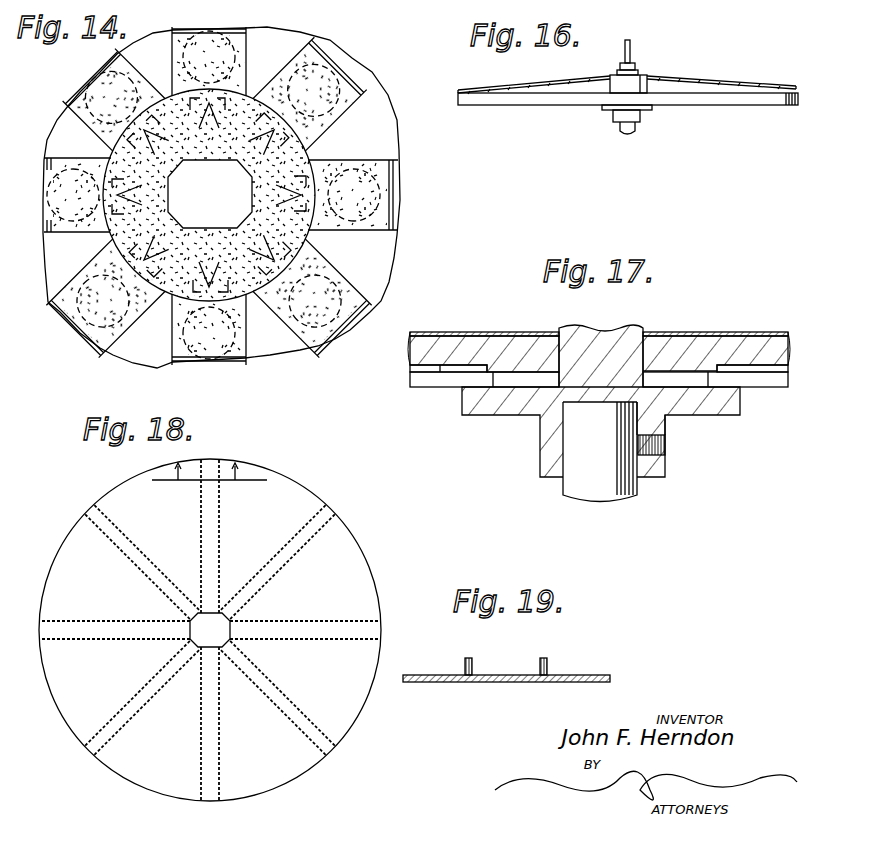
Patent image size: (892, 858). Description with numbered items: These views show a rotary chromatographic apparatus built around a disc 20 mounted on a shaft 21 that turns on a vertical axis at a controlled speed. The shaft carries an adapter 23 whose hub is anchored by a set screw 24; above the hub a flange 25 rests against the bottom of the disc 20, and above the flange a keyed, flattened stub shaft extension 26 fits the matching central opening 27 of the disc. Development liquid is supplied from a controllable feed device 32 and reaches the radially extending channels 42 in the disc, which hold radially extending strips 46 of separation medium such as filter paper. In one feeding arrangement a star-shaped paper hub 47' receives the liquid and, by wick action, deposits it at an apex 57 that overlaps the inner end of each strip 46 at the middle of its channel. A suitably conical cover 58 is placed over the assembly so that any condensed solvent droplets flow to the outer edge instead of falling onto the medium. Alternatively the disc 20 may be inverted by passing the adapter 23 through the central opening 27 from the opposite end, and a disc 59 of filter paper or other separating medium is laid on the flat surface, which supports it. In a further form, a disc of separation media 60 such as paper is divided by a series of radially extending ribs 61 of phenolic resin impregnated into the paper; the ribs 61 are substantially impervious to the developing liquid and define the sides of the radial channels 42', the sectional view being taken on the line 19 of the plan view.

In FIG. 18, the section line 19— 19 is at (207, 487).
In FIG. 14, the disc 20 is at (380, 147).
In FIG. 16, the disc 20 is at (560, 100).
In FIG. 17, the disc 20 is at (713, 347).
In FIG. 18, the disc 20 is at (290, 487).
In FIG. 16, the shaft 21 is at (634, 133).
In FIG. 17, the shaft 21 is at (593, 485).
In FIG. 17, the adapter 23 is at (650, 418).
In FIG. 18, the adapter 23 is at (230, 623).
In FIG. 17, the set screw 24 is at (663, 447).
In FIG. 16, the flange 25 is at (606, 110).
In FIG. 17, the flange 25 is at (502, 405).
In FIG. 17, the stub shaft extension 26 is at (617, 345).
In FIG. 18, the stub shaft extension 26 is at (217, 612).
In FIG. 14, the opening 27 is at (210, 194).
In FIG. 17, the opening 27 is at (573, 334).
In FIG. 16, the feed device 32 is at (631, 52).
In FIG. 14, the radially extending channels 42 is at (341, 97).
In FIG. 17, the radially extending channels 42 is at (595, 399).
In FIG. 18, the radial channels 42' is at (386, 609).
In FIG. 14, the radially extending strips of separation medium 46 is at (363, 195).
In FIG. 18, the radially extending strips of separation medium 46 is at (317, 518).
In FIG. 14, the paper hub 47' is at (310, 133).
In FIG. 14, the apex 57 is at (307, 243).
In FIG. 16, the conical cover 58 is at (700, 78).
In FIG. 17, the disc of filter paper 59 is at (472, 332).
In FIG. 18, the disc of separation media 60 is at (347, 578).
In FIG. 19, the disc of separation media 60 is at (517, 683).
In FIG. 18, the radially extending ribs 61 is at (310, 517).
In FIG. 19, the radially extending ribs 61 is at (470, 660).